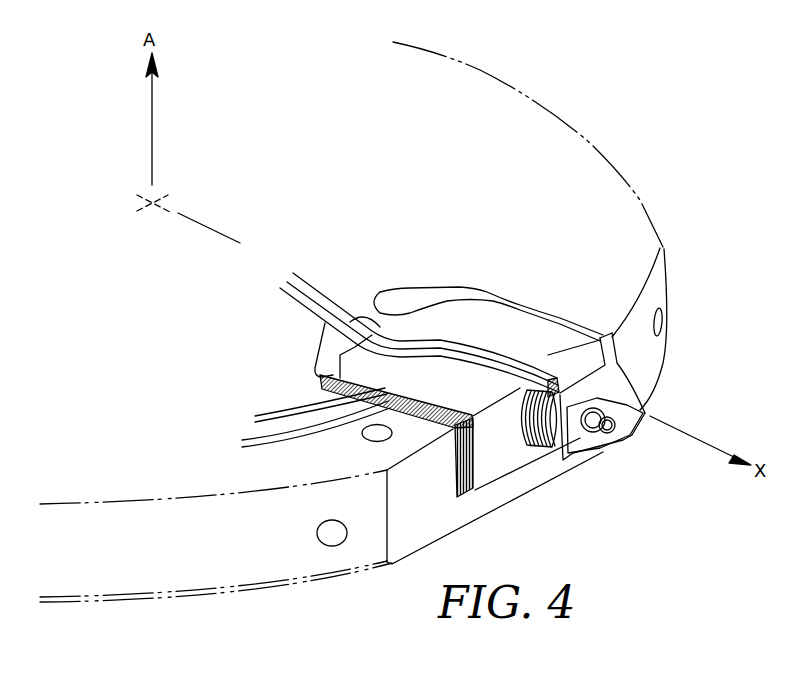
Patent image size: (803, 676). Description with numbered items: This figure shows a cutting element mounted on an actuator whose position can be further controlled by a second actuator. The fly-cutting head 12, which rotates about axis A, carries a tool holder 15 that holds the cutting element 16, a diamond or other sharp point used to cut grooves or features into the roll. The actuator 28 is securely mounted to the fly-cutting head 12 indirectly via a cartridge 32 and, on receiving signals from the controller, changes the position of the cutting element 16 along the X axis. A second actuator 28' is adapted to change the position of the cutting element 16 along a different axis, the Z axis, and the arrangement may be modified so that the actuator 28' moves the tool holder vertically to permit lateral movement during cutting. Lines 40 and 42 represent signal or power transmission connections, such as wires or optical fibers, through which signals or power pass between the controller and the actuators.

The fly-cutting head 12 is at (537, 217).
The tool holder 15 is at (607, 383).
The cutting element 16 is at (647, 408).
The actuator 28 is at (542, 468).
The second actuator 28' is at (414, 468).
The cartridge 32 is at (432, 323).
The line 40 is at (300, 258).
The line 42 is at (258, 403).